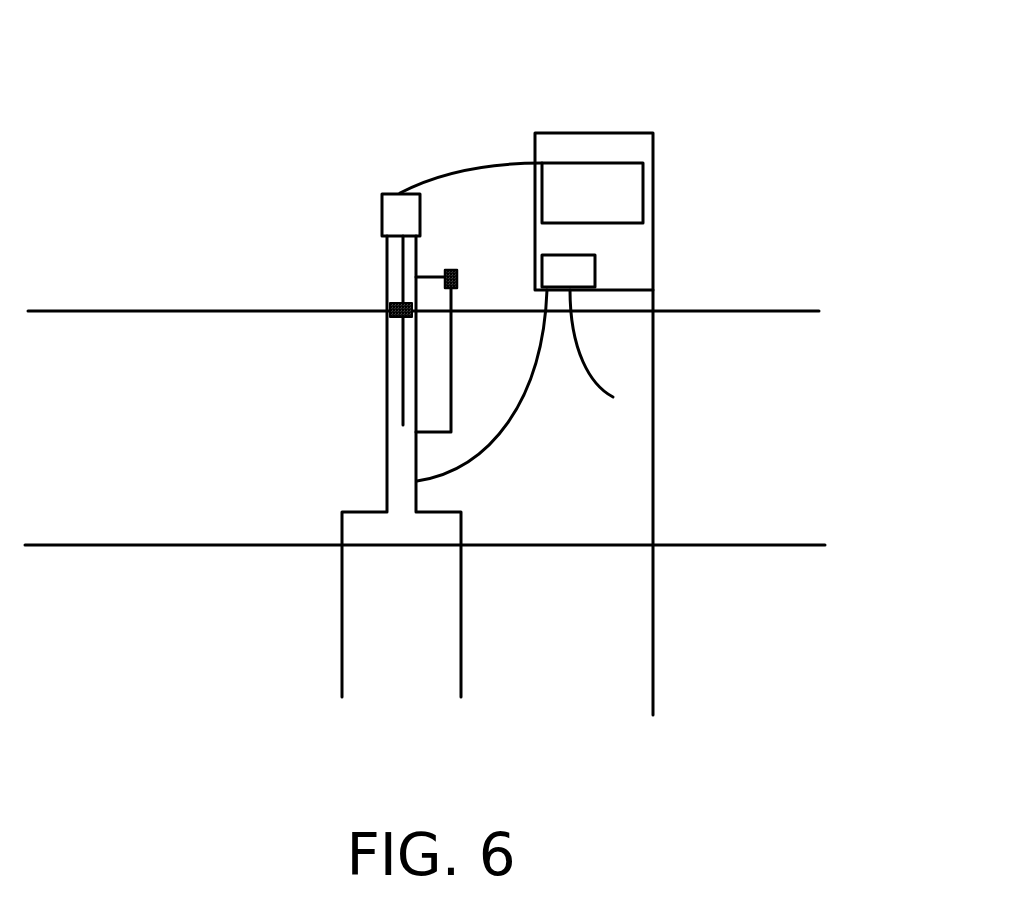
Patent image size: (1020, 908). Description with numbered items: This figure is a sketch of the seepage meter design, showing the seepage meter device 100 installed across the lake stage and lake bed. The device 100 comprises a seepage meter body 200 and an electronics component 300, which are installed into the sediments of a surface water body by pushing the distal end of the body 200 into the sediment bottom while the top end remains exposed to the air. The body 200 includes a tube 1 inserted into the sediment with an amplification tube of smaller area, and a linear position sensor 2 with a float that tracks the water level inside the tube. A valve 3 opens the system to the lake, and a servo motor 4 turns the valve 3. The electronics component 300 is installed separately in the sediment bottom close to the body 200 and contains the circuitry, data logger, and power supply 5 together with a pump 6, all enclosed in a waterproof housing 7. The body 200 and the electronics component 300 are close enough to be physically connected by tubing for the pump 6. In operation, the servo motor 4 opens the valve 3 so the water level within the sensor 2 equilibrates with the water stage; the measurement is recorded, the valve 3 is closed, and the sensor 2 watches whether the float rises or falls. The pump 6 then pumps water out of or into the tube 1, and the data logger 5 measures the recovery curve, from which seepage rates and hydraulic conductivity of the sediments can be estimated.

The seepage meter device 100 is at (185, 113).
The seepage meter body 200 is at (281, 380).
The electronics component 300 is at (697, 250).
The tube inserted into sediment 1 is at (401, 466).
The linear position sensor with float 2 is at (401, 215).
The valve 3 is at (444, 367).
The servo motor 4 is at (446, 282).
The circuitry, data logger, and power supply 5 is at (592, 193).
The pump 6 is at (515, 368).
The waterproof housing 7 is at (537, 424).